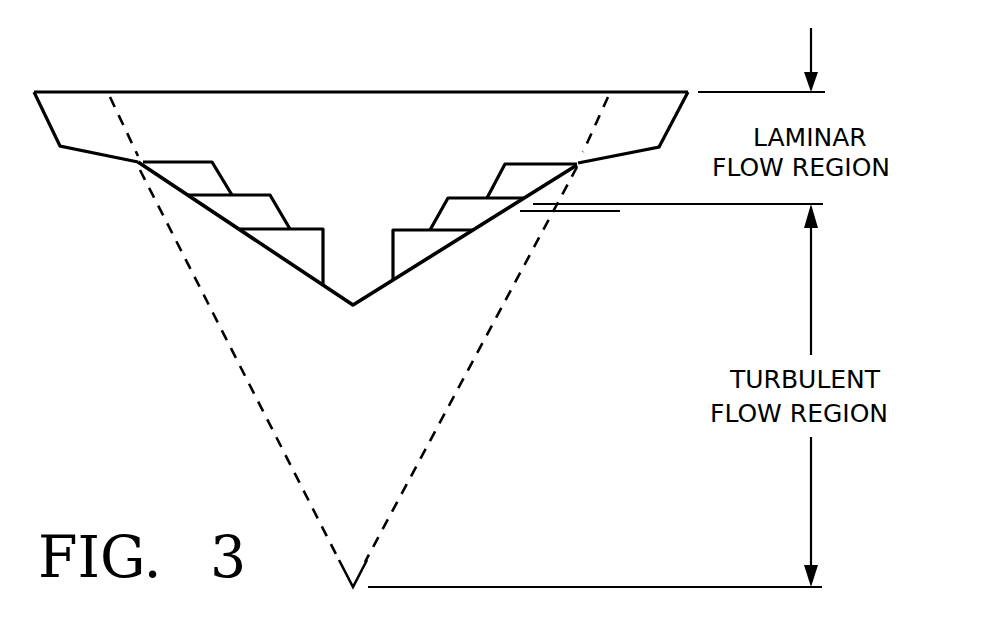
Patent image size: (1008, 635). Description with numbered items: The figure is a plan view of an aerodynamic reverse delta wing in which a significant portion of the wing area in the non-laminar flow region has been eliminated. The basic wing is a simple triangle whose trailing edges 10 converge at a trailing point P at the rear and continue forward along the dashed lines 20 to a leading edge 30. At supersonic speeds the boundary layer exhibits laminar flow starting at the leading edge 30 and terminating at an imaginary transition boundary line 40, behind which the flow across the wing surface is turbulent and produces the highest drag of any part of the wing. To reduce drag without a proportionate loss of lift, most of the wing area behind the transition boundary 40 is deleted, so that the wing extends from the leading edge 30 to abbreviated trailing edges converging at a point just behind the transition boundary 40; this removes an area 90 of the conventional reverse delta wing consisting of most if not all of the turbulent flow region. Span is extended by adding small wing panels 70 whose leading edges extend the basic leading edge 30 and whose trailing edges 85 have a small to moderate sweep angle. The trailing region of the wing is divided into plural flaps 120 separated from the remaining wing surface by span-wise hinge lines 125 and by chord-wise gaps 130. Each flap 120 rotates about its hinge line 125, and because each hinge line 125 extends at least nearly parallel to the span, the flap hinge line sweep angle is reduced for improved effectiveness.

The trailing edges 10 is at (293, 457).
The dashed lines 20 is at (138, 160).
The leading edge 30 is at (452, 92).
The transition boundary line 40 is at (613, 212).
The wing panels 70 is at (100, 134).
The trailing edges 85 is at (308, 281).
The area 90 is at (368, 470).
The flaps 120 is at (290, 243).
The hinge lines 125 is at (298, 222).
The chord-wise gaps 130 is at (393, 263).
The trailing point P is at (353, 307).